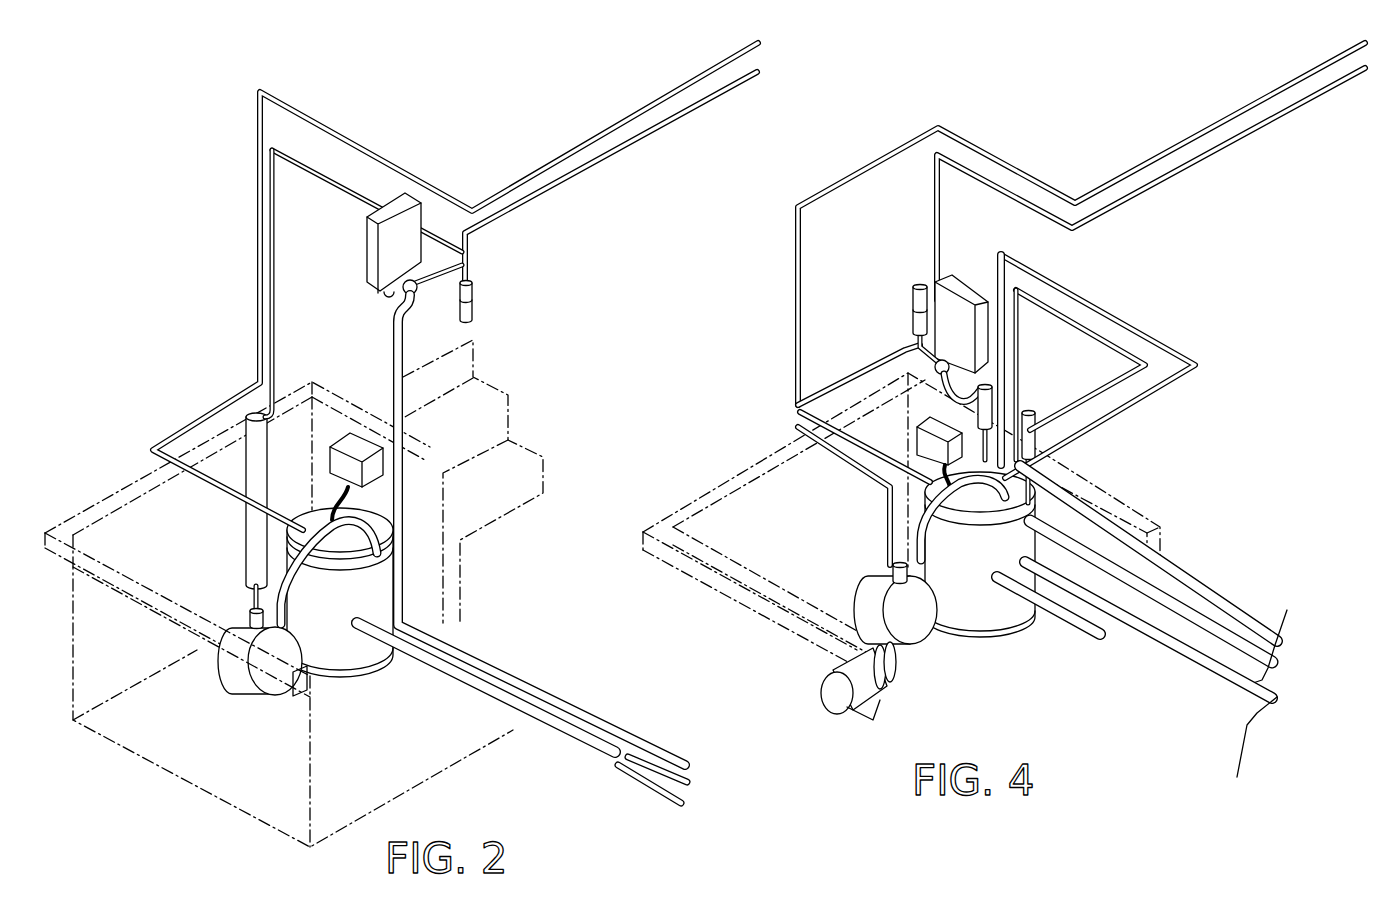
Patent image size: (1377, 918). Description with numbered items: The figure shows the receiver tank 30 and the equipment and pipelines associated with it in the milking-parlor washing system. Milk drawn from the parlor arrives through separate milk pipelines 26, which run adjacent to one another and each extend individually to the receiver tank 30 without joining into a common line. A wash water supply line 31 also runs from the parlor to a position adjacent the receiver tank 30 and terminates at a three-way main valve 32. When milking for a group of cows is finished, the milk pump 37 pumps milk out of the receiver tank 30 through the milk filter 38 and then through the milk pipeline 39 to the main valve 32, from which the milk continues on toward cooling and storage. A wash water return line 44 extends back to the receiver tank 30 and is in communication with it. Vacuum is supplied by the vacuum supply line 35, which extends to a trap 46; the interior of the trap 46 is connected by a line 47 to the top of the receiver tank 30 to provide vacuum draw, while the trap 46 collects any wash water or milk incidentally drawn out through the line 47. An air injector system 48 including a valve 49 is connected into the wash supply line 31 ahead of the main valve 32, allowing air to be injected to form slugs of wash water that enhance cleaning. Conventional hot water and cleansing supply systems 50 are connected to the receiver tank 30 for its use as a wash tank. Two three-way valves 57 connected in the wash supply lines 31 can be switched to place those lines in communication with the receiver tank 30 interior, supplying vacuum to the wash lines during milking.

In FIG. 2, the milk pipelines 26 is at (573, 697).
In FIG. 4, the milk pipelines 26 is at (1127, 610).
In FIG. 2, the receiver tank 30 is at (353, 663).
In FIG. 4, the receiver tank 30 is at (993, 620).
In FIG. 2, the wash water supply line 31 is at (397, 368).
In FIG. 4, the wash water supply line 31 is at (1087, 327).
In FIG. 2, the main valve 32 is at (477, 287).
In FIG. 4, the main valve 32 is at (917, 307).
In FIG. 2, the vacuum supply line 35 is at (250, 620).
In FIG. 4, the vacuum supply line 35 is at (890, 567).
In FIG. 4, the milk pump 37 is at (840, 705).
In FIG. 2, the milk filter 38 is at (243, 563).
In FIG. 4, the milk filter 38 is at (853, 390).
In FIG. 2, the milk pipeline 39 is at (437, 237).
In FIG. 4, the milk pipeline 39 is at (930, 200).
In FIG. 2, the wash water return line 44 is at (362, 146).
In FIG. 4, the wash water return line 44 is at (1007, 163).
In FIG. 2, the trap 46 is at (243, 680).
In FIG. 4, the trap 46 is at (863, 590).
In FIG. 2, the line 47 is at (293, 587).
In FIG. 4, the line 47 is at (933, 533).
In FIG. 2, the air injector system 48 is at (370, 257).
In FIG. 4, the air injector system 48 is at (963, 283).
In FIG. 2, the valve 49 is at (415, 292).
In FIG. 4, the valve 49 is at (937, 380).
In FIG. 2, the hot water supply and cleansing supply systems 50 is at (333, 462).
In FIG. 4, the hot water supply and cleansing supply systems 50 is at (917, 440).
In FIG. 4, the three-way valves 57 is at (987, 400).